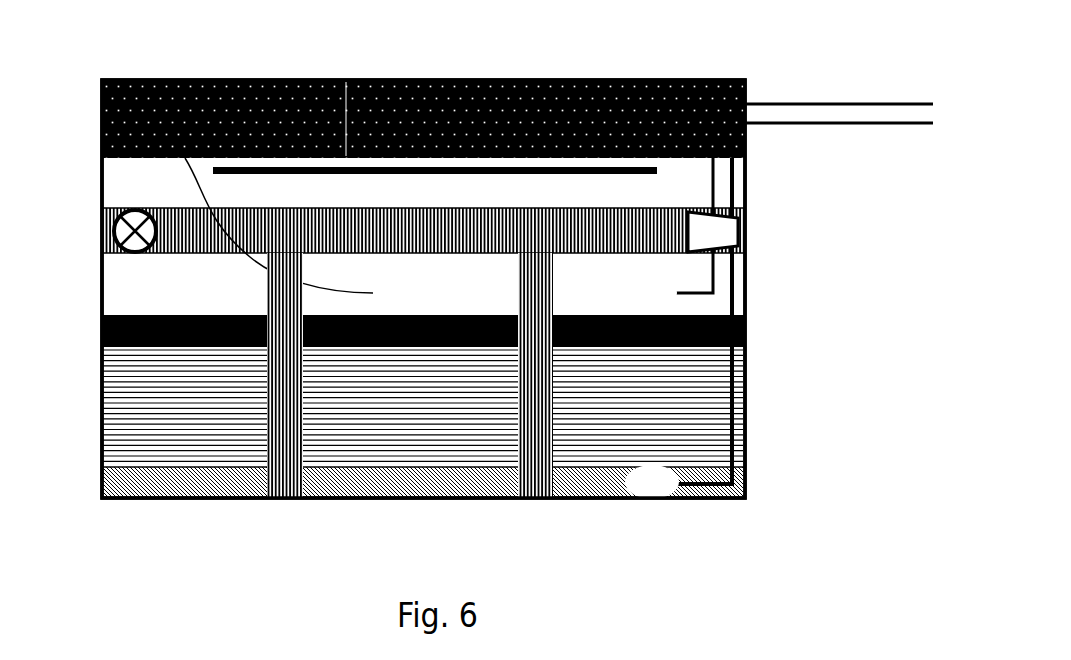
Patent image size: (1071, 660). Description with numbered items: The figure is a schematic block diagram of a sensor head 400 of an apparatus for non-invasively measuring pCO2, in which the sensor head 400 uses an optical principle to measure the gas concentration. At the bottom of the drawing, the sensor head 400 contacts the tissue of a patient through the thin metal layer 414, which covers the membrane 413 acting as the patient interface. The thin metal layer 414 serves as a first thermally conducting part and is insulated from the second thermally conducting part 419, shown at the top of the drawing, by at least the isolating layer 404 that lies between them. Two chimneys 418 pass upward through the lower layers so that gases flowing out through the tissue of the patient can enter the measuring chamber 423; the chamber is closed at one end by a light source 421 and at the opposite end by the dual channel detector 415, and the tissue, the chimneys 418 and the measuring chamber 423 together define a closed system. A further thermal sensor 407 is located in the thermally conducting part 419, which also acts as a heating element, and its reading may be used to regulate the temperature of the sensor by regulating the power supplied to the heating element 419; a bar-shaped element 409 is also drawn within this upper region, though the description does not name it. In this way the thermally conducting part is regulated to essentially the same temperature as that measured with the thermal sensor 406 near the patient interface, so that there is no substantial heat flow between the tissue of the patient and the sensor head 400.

The sensor head 400 is at (332, 76).
The second thermally conducting part 419 is at (157, 185).
The light source 421 is at (115, 226).
The measuring chamber 423 is at (357, 223).
The isolating layer 404 is at (102, 331).
The membrane 413 is at (128, 405).
The chimneys 418 is at (524, 386).
The top electrode 409 is at (718, 167).
The dual channel detector 415 is at (730, 232).
The further thermal sensor 407 is at (657, 292).
The thermal sensor 406 is at (657, 480).
The thin metal layer 414 is at (742, 475).